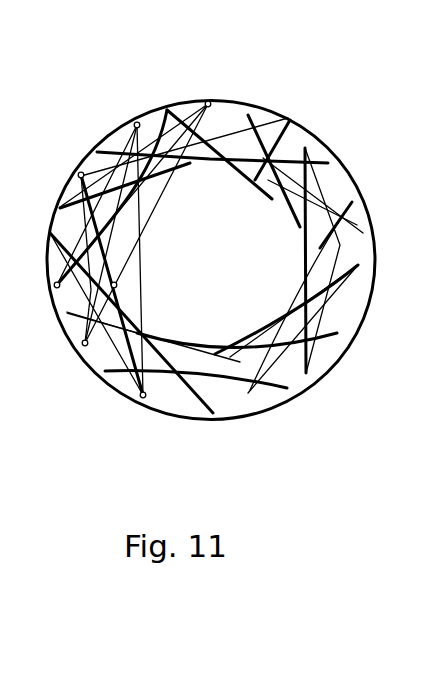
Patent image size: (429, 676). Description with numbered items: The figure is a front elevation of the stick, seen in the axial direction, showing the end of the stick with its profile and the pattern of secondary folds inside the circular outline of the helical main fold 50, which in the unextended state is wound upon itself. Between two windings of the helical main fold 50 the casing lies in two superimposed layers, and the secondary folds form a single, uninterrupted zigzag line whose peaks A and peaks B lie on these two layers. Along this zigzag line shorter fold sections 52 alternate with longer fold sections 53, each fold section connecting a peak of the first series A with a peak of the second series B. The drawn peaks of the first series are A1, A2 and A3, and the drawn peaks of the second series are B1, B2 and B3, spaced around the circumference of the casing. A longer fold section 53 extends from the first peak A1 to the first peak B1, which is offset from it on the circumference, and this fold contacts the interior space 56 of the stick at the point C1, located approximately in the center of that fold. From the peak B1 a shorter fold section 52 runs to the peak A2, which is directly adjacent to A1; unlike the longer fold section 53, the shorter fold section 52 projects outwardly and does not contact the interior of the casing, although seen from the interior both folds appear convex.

The helical main fold 50 is at (317, 133).
The shorter fold section 52 is at (90, 252).
The longer fold section 53 is at (140, 333).
The interior space 56 is at (254, 305).
The first peak of the first series A1 is at (143, 398).
The second peak of the first series A2 is at (84, 346).
The third peak of the first series A3 is at (57, 288).
The first peak of the second series B1 is at (80, 172).
The second peak of the second series B2 is at (137, 122).
The third peak of the second series B3 is at (208, 101).
The contact point C1 is at (119, 286).